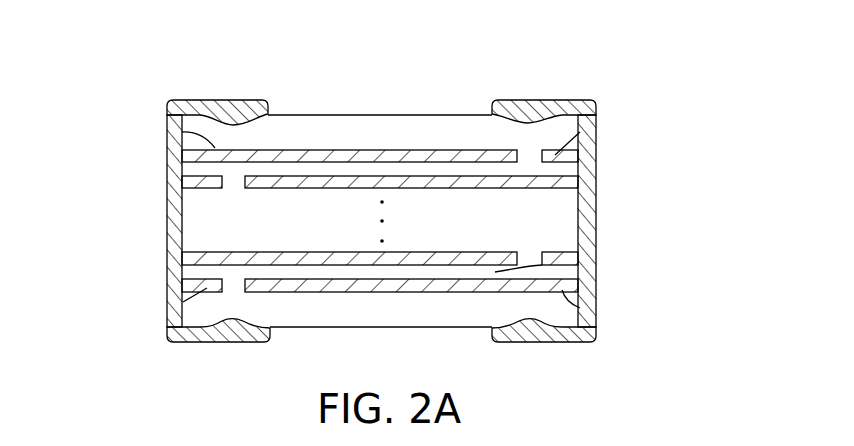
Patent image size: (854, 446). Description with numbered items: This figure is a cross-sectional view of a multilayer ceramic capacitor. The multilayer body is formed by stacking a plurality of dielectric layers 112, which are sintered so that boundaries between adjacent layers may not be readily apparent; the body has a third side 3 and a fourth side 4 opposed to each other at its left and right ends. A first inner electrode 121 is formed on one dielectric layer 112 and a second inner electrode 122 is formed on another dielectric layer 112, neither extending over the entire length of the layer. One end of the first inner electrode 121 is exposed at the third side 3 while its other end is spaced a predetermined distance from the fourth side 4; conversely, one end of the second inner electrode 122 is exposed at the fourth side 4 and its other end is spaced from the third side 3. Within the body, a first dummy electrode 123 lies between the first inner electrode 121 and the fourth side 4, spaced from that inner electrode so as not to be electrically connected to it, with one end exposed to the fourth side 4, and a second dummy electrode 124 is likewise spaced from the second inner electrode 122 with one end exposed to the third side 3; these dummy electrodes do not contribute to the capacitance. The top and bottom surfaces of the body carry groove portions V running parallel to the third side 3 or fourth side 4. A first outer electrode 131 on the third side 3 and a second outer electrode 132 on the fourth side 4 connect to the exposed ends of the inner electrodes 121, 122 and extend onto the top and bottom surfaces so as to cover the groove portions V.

The third side 3 is at (155, 275).
The fourth side 4 is at (606, 181).
The dielectric layer 112 is at (578, 248).
The first inner electrode 121 is at (167, 132).
The second inner electrode 122 is at (598, 305).
The first dummy electrode 123 is at (598, 117).
The second dummy electrode 124 is at (167, 314).
The first outer electrode 131 is at (212, 100).
The second outer electrode 132 is at (556, 100).
The groove portion V is at (231, 96).